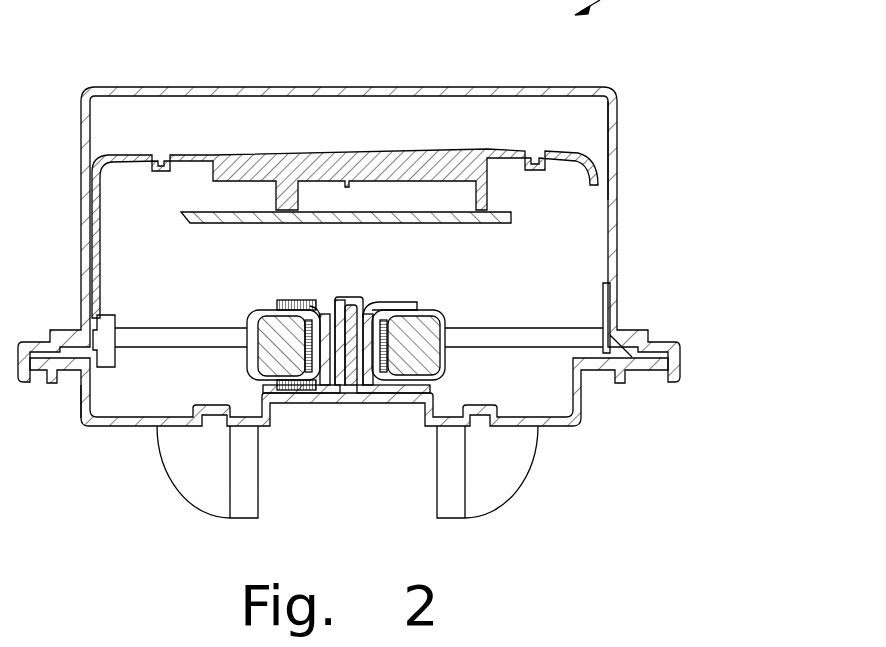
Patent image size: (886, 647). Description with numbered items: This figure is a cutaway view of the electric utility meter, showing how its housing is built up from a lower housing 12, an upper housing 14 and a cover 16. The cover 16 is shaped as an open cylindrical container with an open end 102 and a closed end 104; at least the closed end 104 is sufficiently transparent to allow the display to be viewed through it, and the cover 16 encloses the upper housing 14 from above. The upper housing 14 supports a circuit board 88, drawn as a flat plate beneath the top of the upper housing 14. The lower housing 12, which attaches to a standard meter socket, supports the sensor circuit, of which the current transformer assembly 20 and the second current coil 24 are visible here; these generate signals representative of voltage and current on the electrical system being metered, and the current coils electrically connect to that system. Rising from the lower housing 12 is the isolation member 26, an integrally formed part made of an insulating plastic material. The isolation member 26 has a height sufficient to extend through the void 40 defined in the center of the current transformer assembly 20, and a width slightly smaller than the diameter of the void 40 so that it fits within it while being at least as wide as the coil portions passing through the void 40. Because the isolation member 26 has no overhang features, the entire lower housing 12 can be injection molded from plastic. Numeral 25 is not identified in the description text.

The closed end 104 is at (160, 85).
The cover 16 is at (572, 88).
The upper housing 14 is at (456, 152).
The circuit board 88 is at (212, 225).
The first coil 25 is at (298, 300).
The void 40 is at (262, 358).
The isolation member 26 is at (350, 297).
The second current coil 24 is at (412, 300).
The current transformer assembly 20 is at (442, 318).
The lower housing 12 is at (552, 427).
The open end 102 is at (128, 457).